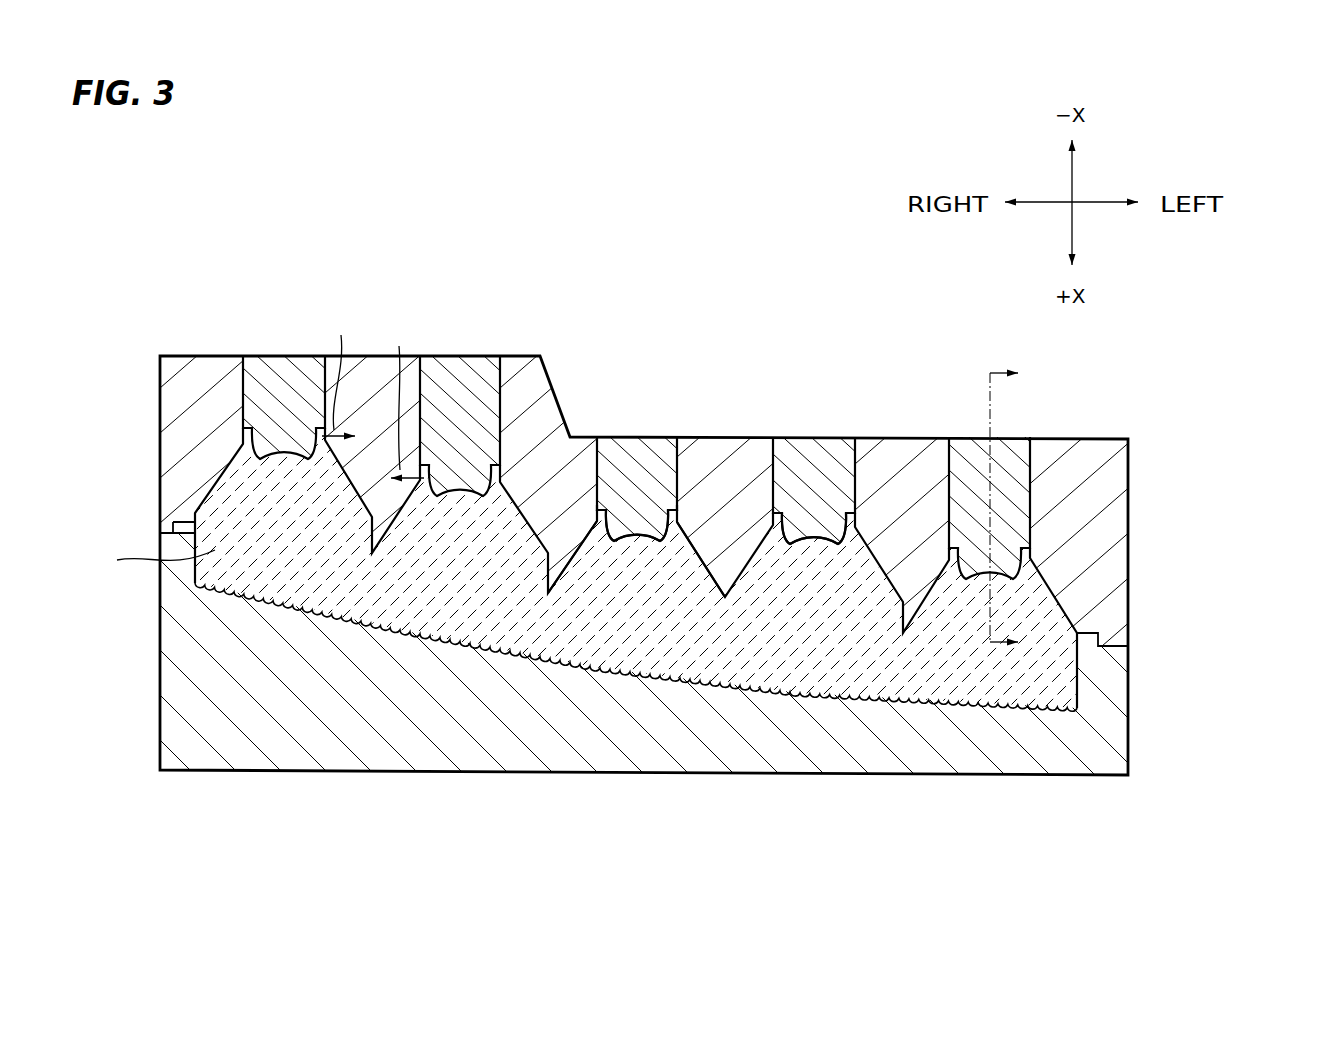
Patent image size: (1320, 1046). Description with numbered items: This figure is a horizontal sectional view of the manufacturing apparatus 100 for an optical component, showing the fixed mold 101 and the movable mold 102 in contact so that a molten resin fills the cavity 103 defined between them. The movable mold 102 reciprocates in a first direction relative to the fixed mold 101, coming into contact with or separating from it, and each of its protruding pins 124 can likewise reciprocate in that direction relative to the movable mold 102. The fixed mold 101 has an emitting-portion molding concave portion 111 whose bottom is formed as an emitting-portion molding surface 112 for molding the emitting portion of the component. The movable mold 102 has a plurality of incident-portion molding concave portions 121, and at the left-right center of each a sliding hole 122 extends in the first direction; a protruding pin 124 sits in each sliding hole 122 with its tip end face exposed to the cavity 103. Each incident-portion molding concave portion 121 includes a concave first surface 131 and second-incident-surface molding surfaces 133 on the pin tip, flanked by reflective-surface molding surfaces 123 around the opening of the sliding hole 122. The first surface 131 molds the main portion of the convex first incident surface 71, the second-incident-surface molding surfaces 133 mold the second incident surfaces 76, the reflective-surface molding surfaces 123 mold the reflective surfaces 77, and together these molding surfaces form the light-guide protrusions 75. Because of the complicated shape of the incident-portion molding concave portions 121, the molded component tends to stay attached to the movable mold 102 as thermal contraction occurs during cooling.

The manufacturing apparatus 100 is at (665, 255).
The fixed mold 101 is at (1165, 726).
The movable mold 102 is at (1182, 508).
The cavity 103 is at (946, 702).
The emitting-portion molding concave portion 111 is at (1064, 681).
The emitting-portion molding surface 112 is at (1005, 696).
The incident-portion molding concave portion 121 is at (297, 515).
The sliding hole 122 is at (257, 356).
The reflective-surface molding surface 123 is at (745, 605).
The protruding pin 124 is at (286, 370).
The first surface 131 is at (815, 542).
The second-incident-surface molding surface 133 is at (789, 546).
The first incident surface 71 is at (637, 533).
The light-guide protrusion 75 is at (600, 508).
The second incident surface 76 is at (614, 538).
The reflective surface 77 is at (565, 525).